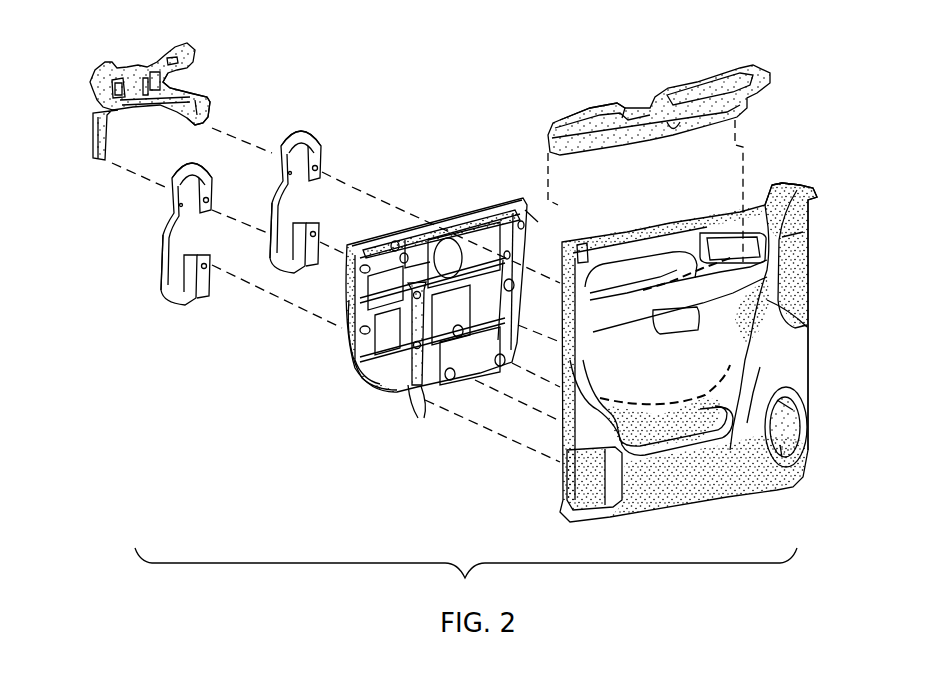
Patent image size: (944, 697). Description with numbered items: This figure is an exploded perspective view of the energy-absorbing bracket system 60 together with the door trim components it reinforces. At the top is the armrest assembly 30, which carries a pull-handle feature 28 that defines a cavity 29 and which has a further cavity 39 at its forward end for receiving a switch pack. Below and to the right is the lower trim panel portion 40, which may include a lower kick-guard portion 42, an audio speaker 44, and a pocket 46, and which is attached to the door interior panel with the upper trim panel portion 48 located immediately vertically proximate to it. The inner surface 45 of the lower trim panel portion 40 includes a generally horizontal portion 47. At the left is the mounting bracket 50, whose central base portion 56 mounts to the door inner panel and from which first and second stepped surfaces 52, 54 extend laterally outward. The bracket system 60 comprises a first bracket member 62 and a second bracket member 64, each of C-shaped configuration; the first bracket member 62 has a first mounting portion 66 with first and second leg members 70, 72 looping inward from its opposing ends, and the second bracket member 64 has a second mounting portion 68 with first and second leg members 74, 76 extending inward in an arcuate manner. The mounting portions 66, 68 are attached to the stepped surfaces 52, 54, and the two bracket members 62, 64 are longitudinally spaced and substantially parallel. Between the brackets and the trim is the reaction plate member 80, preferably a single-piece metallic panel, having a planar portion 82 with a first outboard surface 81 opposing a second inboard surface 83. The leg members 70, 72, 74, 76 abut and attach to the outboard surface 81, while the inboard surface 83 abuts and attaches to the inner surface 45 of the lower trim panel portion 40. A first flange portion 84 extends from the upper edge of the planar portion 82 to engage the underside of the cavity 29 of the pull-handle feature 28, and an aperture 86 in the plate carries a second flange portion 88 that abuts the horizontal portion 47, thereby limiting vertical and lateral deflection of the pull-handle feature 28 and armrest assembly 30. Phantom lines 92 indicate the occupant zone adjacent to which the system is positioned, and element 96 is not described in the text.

The pull-handle feature 28 is at (659, 147).
The cavity 29 is at (673, 130).
The armrest assembly 30 is at (592, 110).
The cavity 39 is at (723, 93).
The lower trim panel portion 40 is at (720, 353).
The lower kick-guard portion 42 is at (698, 468).
The audio speaker 44 is at (793, 420).
The inner surface of the trim panel 45 is at (770, 207).
The pocket 46 is at (662, 450).
The generally horizontal portion 47 is at (622, 305).
The upper trim panel portion 48 is at (807, 227).
The mounting bracket 50 is at (150, 98).
The first stepped surface 52 is at (90, 120).
The second stepped surface 54 is at (203, 88).
The central base portion 56 is at (155, 65).
The energy-absorbing bracket system 60 is at (234, 422).
The first bracket member 62 is at (182, 244).
The second bracket member 64 is at (296, 226).
The first mounting portion 66 is at (162, 229).
The second mounting portion 68 is at (272, 217).
The first leg member 70 is at (212, 173).
The second leg member 72 is at (210, 280).
The first leg member 74 is at (315, 137).
The second leg member 76 is at (317, 232).
The reaction plate member 80 is at (418, 290).
The first outboard surface 81 is at (487, 189).
The planar portion 82 is at (378, 395).
The second inboard surface 83 is at (540, 214).
The first flange portion 84 is at (460, 207).
The aperture 86 is at (482, 207).
The second flange portion 88 is at (405, 227).
The phantom lines 92 is at (671, 226).
The fastener holes 96 is at (462, 345).